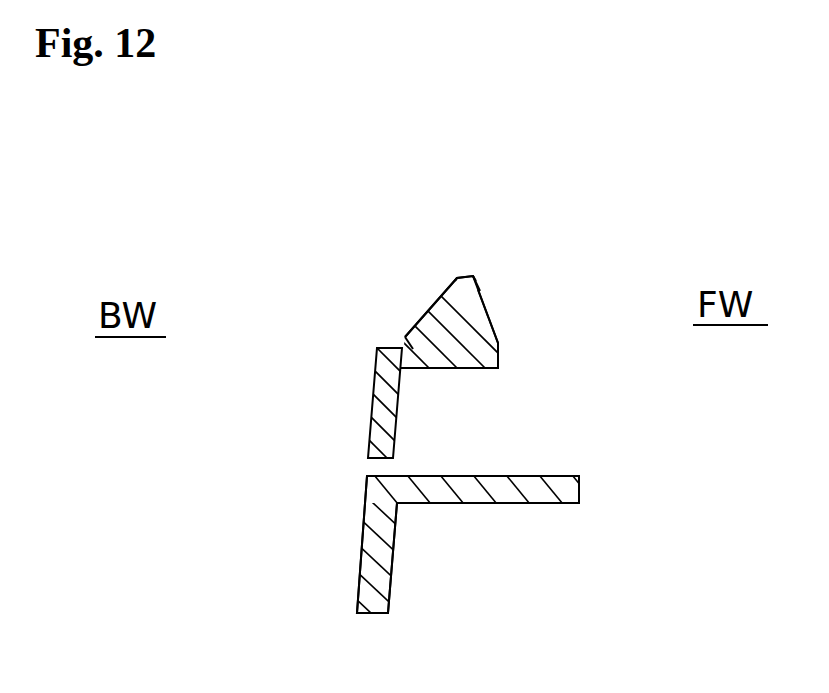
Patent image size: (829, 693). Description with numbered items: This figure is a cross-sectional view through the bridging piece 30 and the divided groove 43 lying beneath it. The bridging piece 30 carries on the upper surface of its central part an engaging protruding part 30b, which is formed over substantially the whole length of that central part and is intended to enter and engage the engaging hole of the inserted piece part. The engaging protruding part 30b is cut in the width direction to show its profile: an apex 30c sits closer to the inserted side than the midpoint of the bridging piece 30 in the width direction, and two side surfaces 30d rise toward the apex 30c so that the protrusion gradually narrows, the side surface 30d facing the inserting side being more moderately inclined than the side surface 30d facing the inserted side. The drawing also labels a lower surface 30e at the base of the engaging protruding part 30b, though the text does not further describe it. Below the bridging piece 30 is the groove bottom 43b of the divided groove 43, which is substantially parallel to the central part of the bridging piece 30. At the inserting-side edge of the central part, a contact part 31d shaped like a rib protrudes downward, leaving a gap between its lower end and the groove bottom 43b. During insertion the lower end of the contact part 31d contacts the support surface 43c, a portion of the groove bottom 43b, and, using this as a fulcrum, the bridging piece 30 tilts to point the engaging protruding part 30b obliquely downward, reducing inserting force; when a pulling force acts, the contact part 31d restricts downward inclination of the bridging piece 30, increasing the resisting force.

The bridging piece 30 is at (405, 337).
The engaging protruding part 30b is at (480, 290).
The apex 30c is at (465, 275).
The side surface 30d is at (428, 311).
The bottom surface 30e is at (470, 368).
The contact part 31d is at (370, 422).
The divided groove 43 is at (468, 432).
The groove bottom 43b is at (444, 477).
The support surface 43c is at (380, 477).